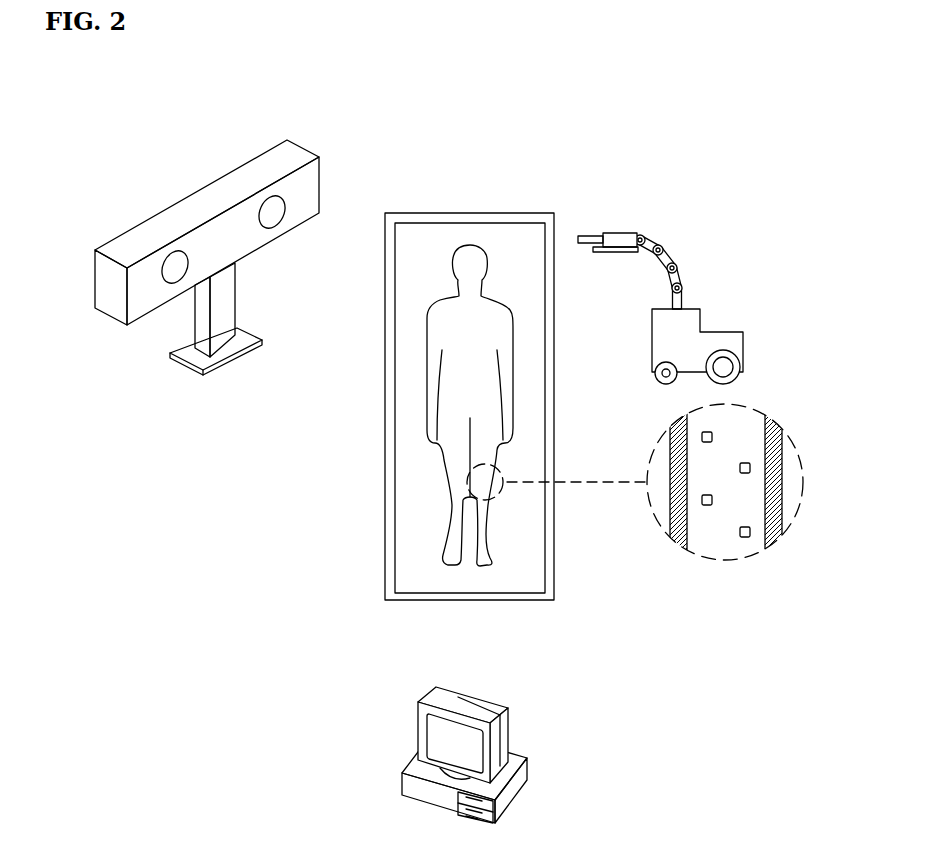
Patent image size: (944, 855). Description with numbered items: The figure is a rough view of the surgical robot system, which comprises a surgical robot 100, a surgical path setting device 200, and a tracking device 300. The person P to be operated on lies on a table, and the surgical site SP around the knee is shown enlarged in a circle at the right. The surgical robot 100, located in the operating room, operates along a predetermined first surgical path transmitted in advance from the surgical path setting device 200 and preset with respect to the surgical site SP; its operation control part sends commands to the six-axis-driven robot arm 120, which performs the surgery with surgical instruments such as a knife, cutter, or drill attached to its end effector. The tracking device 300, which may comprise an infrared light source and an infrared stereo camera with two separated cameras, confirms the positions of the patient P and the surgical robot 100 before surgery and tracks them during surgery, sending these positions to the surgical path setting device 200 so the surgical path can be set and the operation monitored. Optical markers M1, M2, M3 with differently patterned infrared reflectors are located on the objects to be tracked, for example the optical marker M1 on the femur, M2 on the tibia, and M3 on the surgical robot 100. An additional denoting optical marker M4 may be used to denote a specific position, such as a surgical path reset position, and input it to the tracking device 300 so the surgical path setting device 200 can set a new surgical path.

The tracking device 300 is at (295, 155).
The person to be operated on P is at (513, 318).
The surgical robot 100 is at (727, 268).
The robot arm 120 is at (592, 230).
The surgical site SP is at (503, 470).
The optical marker M1 is at (703, 441).
The optical marker M2 is at (745, 474).
The optical marker M3 is at (703, 504).
The denoting optical marker M4 is at (745, 538).
The surgical path setting device 200 is at (490, 702).